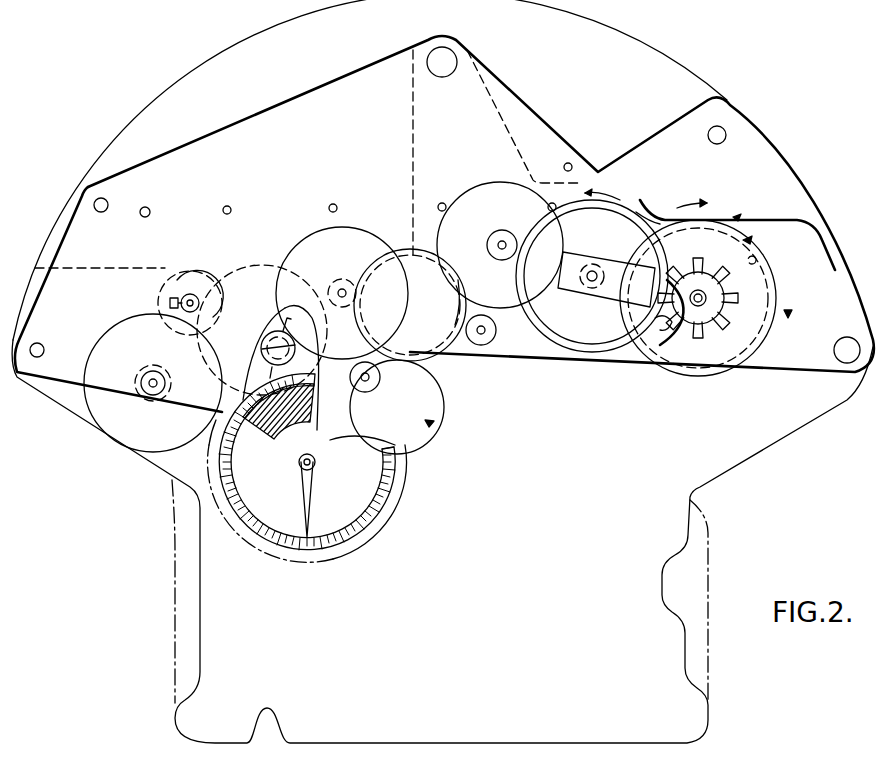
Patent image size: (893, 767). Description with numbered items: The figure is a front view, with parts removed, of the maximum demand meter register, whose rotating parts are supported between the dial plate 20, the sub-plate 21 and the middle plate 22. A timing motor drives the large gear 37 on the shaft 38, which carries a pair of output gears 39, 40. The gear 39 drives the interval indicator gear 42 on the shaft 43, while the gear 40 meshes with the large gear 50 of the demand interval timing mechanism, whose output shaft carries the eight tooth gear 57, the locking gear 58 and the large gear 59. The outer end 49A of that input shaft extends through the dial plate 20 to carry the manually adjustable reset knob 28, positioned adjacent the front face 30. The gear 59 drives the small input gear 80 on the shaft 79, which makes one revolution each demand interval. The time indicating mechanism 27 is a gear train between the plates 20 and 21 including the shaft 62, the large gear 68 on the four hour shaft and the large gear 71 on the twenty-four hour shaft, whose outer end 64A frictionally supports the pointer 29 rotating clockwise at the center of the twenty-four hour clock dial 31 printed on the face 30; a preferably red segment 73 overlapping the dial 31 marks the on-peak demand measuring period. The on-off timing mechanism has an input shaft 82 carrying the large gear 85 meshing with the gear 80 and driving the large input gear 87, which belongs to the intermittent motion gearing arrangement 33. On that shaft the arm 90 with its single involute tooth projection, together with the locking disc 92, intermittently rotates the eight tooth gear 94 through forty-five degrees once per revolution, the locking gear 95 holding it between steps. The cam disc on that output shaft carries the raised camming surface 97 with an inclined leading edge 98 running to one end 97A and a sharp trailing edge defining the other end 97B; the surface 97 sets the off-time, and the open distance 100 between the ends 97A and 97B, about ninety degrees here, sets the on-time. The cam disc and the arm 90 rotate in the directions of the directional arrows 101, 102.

The dial plate 20 is at (672, 53).
The sub-plate 21 is at (283, 100).
The middle plate 22 is at (507, 117).
The time indicating mechanism 27 is at (425, 420).
The reset knob 28 is at (296, 310).
The pointer 29 is at (315, 493).
The front face 30 is at (392, 332).
The clock dial 31 is at (268, 544).
The intermittent motion gearing arrangement 33 is at (627, 348).
The large gear 37 is at (200, 258).
The shaft 38 is at (163, 298).
The output gear 39 is at (158, 304).
The output gear 40 is at (175, 262).
The interval indicator gear 42 is at (92, 427).
The shaft 43 is at (155, 392).
The outer end of shaft 49A is at (300, 342).
The large gear 50 is at (252, 268).
The eight tooth gear 57 is at (446, 276).
The locking gear 58 is at (432, 262).
The large gear 59 is at (456, 292).
The shaft 62 is at (342, 290).
The outer end of shaft 64A is at (298, 463).
The large gear 68 is at (443, 402).
The large gear 71 is at (400, 447).
The segment 73 is at (290, 436).
The shaft 79 is at (480, 345).
The small input gear 80 is at (497, 330).
The input shaft 82 is at (502, 243).
The large gear 85 is at (475, 177).
The large input gear 87 is at (612, 195).
The arm 90 is at (607, 302).
The locking disc 92 is at (640, 207).
The eight tooth gear 94 is at (703, 320).
The locking gear 95 is at (667, 330).
The camming surface 97 is at (643, 252).
The end of camming surface 97A is at (733, 217).
The end of camming surface 97B is at (788, 318).
The inclined leading edge 98 is at (745, 240).
The open distance 100 is at (760, 227).
The directional arrow 101 is at (690, 200).
The directional arrow 102 is at (613, 197).